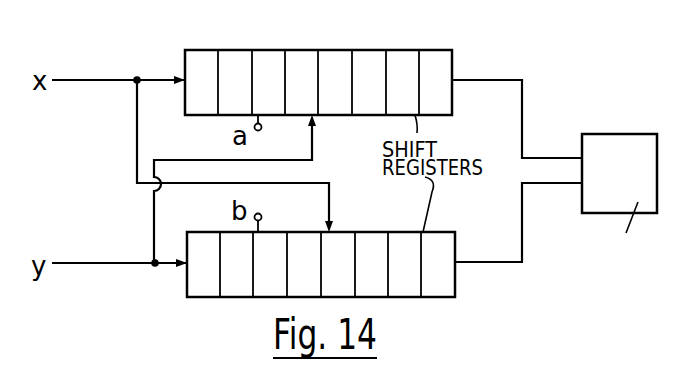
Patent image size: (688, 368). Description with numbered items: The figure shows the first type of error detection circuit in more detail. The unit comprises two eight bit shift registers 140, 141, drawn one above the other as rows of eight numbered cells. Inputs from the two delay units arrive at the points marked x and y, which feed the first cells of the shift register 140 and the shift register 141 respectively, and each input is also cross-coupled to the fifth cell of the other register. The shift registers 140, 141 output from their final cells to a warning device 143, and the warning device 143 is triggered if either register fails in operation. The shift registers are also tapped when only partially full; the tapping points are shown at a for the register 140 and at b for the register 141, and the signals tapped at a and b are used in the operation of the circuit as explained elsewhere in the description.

The eight bit shift register 140 is at (319, 50).
The eight bit shift register 141 is at (368, 232).
The warning device 143 is at (638, 183).